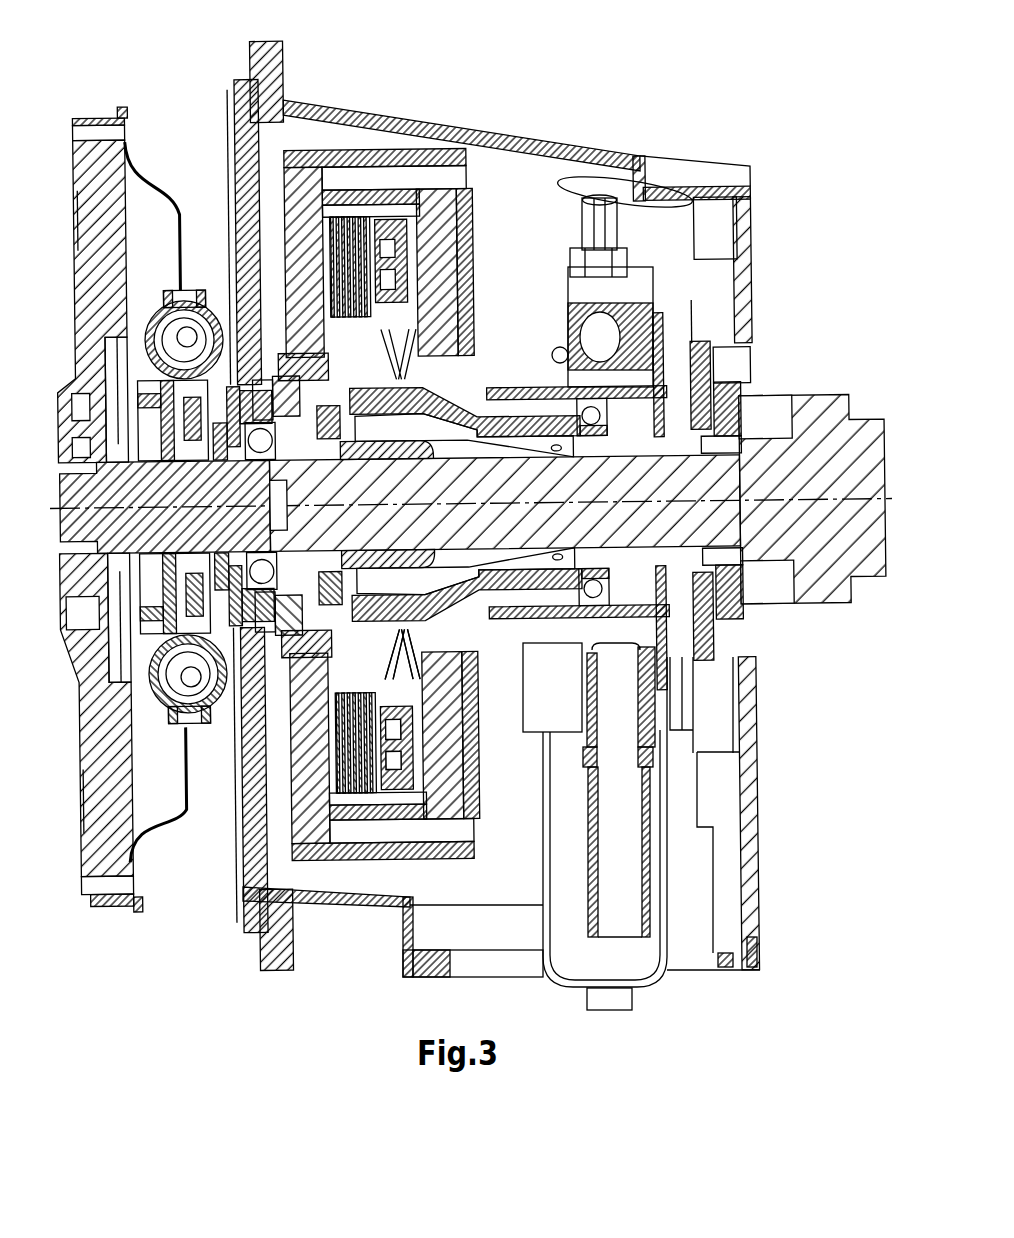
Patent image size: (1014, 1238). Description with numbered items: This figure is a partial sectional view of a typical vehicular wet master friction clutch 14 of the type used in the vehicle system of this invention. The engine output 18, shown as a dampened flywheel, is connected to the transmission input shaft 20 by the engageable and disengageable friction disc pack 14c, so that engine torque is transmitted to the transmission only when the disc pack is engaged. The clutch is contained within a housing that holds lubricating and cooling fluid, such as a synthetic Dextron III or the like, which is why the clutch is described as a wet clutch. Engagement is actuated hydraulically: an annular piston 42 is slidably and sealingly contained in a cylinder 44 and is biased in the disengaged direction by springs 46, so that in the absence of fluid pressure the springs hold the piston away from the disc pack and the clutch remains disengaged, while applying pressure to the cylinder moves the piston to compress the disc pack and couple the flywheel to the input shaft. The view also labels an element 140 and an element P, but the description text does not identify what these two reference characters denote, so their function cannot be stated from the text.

The wet master friction clutch 14 is at (692, 122).
The friction disc pack 14c is at (352, 880).
The engine output 18 is at (113, 263).
The transmission input shaft 20 is at (863, 450).
The annular piston 42 is at (437, 738).
The cylinder 44 is at (425, 785).
The springs 46 is at (375, 632).
The housing cover plate 140 is at (533, 140).
The pressure plate P is at (442, 150).